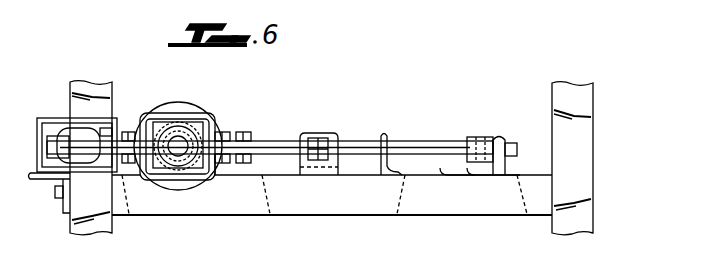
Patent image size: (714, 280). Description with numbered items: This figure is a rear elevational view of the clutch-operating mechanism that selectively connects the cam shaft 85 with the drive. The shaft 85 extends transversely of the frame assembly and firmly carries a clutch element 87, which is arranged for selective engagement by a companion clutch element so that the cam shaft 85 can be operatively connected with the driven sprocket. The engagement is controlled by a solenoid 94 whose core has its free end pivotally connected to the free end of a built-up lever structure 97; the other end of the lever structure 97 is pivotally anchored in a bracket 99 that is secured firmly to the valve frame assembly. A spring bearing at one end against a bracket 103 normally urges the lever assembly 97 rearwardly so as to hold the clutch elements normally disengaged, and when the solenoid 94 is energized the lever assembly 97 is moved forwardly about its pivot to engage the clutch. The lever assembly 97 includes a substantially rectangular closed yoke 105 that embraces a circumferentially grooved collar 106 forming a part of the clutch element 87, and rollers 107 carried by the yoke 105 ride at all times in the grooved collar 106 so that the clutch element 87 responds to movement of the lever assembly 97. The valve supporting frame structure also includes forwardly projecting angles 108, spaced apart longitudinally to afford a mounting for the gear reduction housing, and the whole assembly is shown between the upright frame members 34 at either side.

The support post 34 is at (95, 82).
The shaft 85 is at (183, 150).
The clutch element 87 is at (180, 103).
The solenoid 94 is at (50, 117).
The lever structure 97 is at (446, 146).
The bracket 99 is at (497, 137).
The bracket 103 is at (319, 133).
The yoke 105 is at (218, 128).
The grooved collar 106 is at (163, 130).
The rollers 107 is at (197, 122).
The angles 108 is at (510, 172).